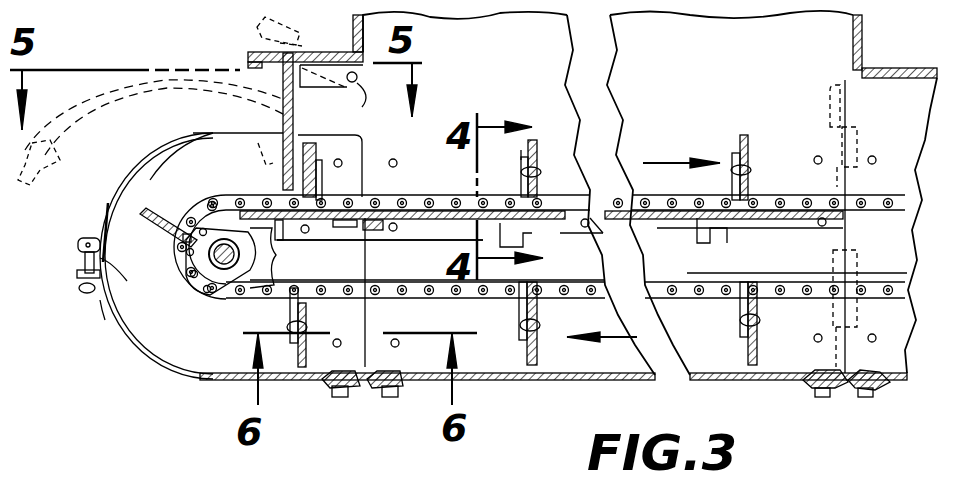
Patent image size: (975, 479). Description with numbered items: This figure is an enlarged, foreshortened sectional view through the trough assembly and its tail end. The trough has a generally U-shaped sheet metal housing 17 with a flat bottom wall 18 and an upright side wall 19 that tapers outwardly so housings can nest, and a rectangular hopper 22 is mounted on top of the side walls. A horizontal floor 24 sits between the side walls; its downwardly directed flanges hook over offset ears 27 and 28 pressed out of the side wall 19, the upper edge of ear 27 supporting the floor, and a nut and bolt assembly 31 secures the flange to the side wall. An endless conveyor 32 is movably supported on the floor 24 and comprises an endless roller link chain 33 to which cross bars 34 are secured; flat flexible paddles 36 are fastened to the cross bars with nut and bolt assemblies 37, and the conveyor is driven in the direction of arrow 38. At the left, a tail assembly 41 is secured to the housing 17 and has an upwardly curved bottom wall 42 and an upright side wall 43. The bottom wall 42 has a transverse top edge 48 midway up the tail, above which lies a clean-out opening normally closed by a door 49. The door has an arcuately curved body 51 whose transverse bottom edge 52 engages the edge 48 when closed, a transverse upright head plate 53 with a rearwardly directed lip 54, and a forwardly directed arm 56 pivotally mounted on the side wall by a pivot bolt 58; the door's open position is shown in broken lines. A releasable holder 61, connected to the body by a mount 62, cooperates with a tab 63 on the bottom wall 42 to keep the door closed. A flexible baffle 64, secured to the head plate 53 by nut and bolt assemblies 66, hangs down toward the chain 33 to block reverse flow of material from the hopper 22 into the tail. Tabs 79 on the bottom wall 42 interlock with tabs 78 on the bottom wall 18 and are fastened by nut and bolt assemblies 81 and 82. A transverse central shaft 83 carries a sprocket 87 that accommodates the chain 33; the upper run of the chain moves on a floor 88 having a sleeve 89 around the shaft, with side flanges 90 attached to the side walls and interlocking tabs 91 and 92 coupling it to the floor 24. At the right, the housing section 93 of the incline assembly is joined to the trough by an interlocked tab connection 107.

The housing 17 is at (492, 380).
The bottom wall 18 is at (586, 380).
The side wall 19 is at (631, 357).
The hopper 22 is at (868, 48).
The floor 24 is at (452, 220).
The ear 27 is at (543, 243).
The ear 28 is at (718, 234).
The nut and bolt assembly 31 is at (592, 226).
The endless conveyor 32 is at (727, 136).
The roller link chain 33 is at (445, 196).
The cross bar 34 is at (527, 160).
The paddle 36 is at (538, 140).
The nut and bolt assembly 37 is at (540, 172).
The arrow 38 is at (670, 163).
The tail assembly 41 is at (95, 312).
The bottom wall 42 is at (140, 350).
The side wall 43 is at (150, 180).
The transverse top edge 48 is at (129, 283).
The door 49 is at (133, 106).
The body 51 is at (190, 136).
The transverse bottom edge 52 is at (108, 211).
The head plate 53 is at (282, 116).
The lip 54 is at (252, 54).
The arm 56 is at (339, 100).
The pivot bolt 58 is at (360, 82).
The holder 61 is at (85, 262).
The mount 62 is at (78, 244).
The tab 63 is at (80, 283).
The flexible baffle 64 is at (290, 165).
The nut and bolt assembly 66 is at (298, 78).
The tab 78 is at (326, 383).
The tab 79 is at (398, 383).
The nut and bolt assembly 81 is at (340, 397).
The nut and bolt assembly 82 is at (390, 397).
The central shaft 83 is at (191, 226).
The sprocket 87 is at (277, 327).
The floor 88 is at (278, 258).
The sleeve 89 is at (220, 303).
The side flange 90 is at (318, 241).
The interlocking tab 91 is at (376, 231).
The interlocking tab 92 is at (345, 228).
The housing section 93 is at (875, 378).
The interlocked tab connection 107 is at (870, 392).